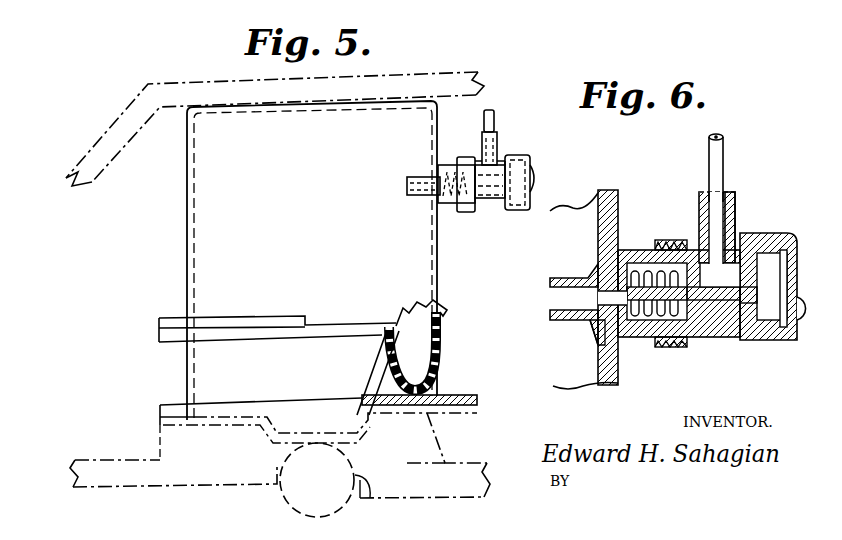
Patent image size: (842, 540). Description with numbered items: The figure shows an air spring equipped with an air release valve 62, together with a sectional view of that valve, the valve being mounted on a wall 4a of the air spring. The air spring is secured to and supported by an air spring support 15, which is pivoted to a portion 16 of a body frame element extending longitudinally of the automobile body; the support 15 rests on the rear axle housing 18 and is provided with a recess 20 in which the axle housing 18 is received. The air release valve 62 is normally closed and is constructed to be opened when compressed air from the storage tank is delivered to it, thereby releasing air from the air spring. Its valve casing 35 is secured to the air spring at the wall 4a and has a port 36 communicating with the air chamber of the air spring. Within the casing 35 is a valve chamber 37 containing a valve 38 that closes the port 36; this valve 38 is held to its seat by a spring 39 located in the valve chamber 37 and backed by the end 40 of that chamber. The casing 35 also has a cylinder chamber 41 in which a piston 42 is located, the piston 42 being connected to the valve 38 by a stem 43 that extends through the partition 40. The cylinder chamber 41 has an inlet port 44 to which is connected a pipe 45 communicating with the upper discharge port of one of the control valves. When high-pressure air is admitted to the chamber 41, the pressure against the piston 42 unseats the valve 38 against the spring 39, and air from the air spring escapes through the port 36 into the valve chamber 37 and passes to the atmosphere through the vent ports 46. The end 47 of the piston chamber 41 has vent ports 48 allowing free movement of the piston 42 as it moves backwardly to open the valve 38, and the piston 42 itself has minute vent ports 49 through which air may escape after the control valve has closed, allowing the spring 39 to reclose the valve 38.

In FIG. 5, the door panel / mounting wall 4a is at (188, 234).
In FIG. 6, the door panel / mounting wall 4a is at (610, 386).
In FIG. 5, the air spring support 15 is at (175, 483).
In FIG. 5, the portion of a body frame element 16 is at (196, 82).
In FIG. 5, the rear axle housing 18 is at (297, 503).
In FIG. 5, the recess 20 is at (381, 482).
In FIG. 6, the valve casing 35 is at (620, 252).
In FIG. 5, the port 36 is at (405, 186).
In FIG. 6, the port 36 is at (549, 292).
In FIG. 6, the valve chamber 37 is at (650, 340).
In FIG. 6, the valve 38 is at (600, 316).
In FIG. 6, the spring 39 is at (661, 322).
In FIG. 6, the end of valve chamber 40 is at (696, 305).
In FIG. 6, the cylinder chamber 41 is at (720, 275).
In FIG. 6, the piston 42 is at (772, 286).
In FIG. 6, the stem 43 is at (725, 304).
In FIG. 5, the inlet port 44 is at (482, 155).
In FIG. 6, the inlet port 44 is at (715, 224).
In FIG. 5, the pipe 45 is at (490, 112).
In FIG. 6, the pipe 45 is at (708, 148).
In FIG. 6, the vent ports 46 is at (648, 252).
In FIG. 5, the end of piston chamber 47 is at (532, 178).
In FIG. 6, the end of piston chamber 47 is at (806, 302).
In FIG. 5, the vent ports 48 is at (536, 160).
In FIG. 6, the vent ports 48 is at (806, 242).
In FIG. 6, the minute vent ports 49 is at (762, 240).
In FIG. 5, the air release valve 62 is at (507, 151).
In FIG. 6, the air release valve 62 is at (743, 224).